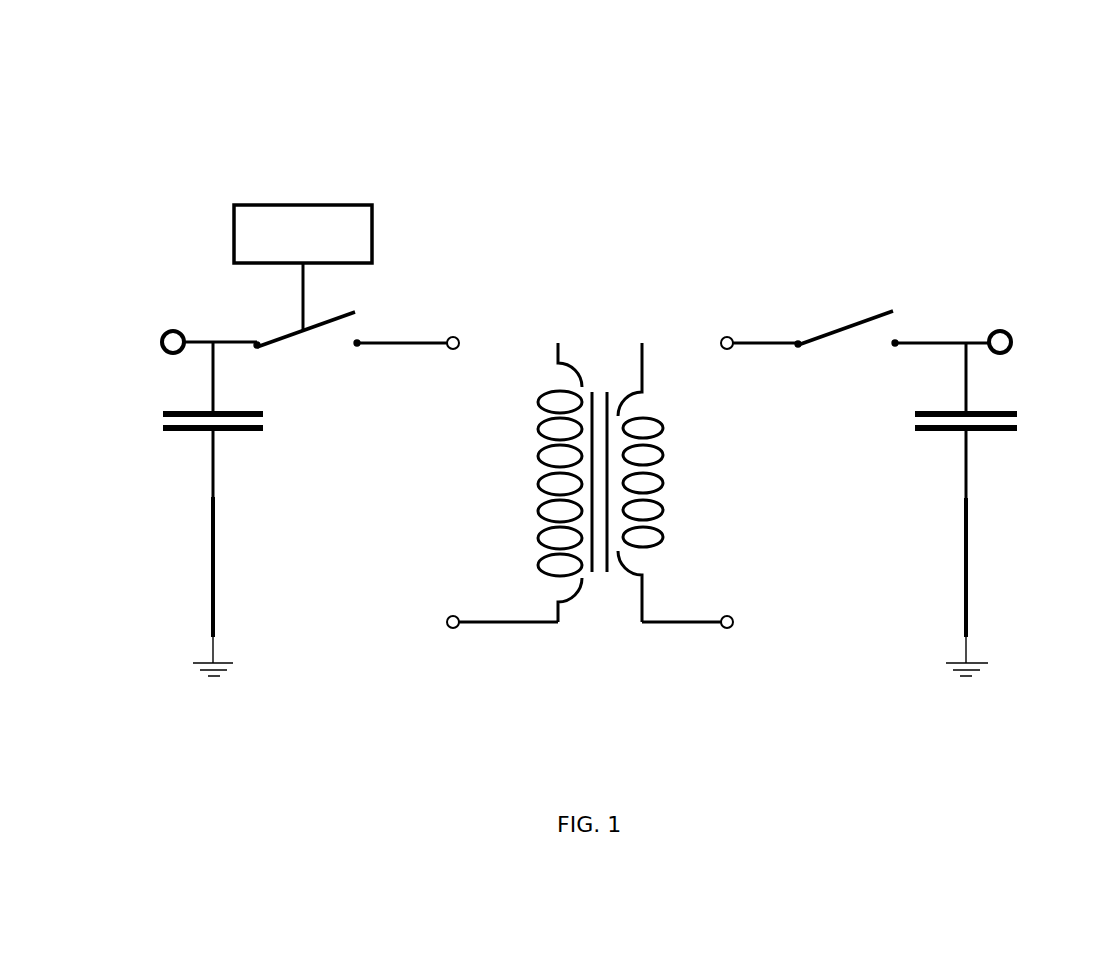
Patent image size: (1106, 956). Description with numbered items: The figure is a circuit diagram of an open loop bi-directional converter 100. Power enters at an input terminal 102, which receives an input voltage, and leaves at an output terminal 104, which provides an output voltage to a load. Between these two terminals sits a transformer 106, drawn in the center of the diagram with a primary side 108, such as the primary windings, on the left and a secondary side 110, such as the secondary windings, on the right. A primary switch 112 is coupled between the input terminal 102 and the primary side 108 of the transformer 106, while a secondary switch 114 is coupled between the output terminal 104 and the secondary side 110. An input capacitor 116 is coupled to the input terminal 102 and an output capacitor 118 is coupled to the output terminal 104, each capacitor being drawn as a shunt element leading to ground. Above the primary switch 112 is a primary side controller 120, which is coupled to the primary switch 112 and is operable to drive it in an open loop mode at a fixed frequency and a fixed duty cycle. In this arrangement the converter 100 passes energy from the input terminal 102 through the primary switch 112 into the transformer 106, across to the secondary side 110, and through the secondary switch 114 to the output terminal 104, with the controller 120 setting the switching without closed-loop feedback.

The open loop bi-directional converter 100 is at (850, 75).
The input terminal 102 is at (167, 330).
The output terminal 104 is at (1008, 330).
The transformer 106 is at (612, 444).
The primary side 108 is at (533, 342).
The secondary side 110 is at (673, 342).
The primary switch 112 is at (327, 359).
The secondary switch 114 is at (848, 363).
The input capacitor 116 is at (172, 454).
The output capacitor 118 is at (939, 456).
The primary side controller 120 is at (308, 203).